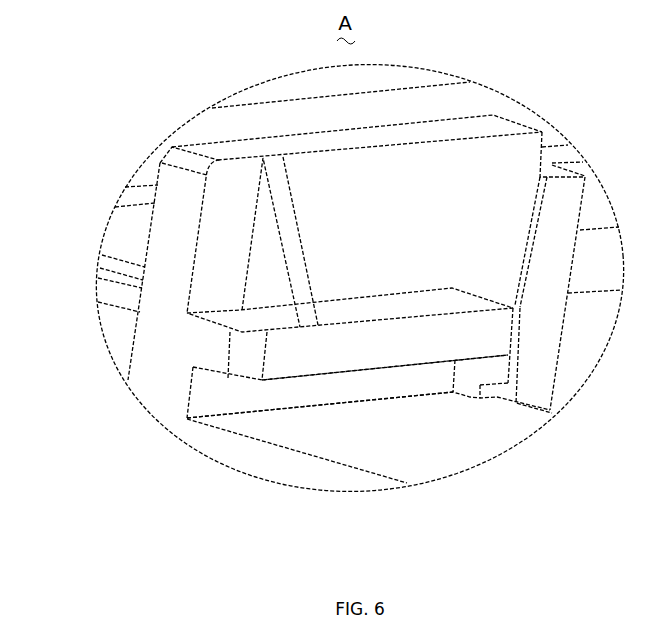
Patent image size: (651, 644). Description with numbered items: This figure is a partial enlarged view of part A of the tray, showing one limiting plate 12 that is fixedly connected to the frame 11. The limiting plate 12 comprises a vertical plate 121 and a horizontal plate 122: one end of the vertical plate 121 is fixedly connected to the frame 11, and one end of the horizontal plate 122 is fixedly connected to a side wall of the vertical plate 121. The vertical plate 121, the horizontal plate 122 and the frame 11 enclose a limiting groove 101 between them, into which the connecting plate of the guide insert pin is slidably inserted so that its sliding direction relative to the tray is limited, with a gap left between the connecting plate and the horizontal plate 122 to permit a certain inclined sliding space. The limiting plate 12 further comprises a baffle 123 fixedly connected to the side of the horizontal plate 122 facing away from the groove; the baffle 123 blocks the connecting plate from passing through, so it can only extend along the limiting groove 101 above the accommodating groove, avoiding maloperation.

The frame 11 is at (375, 443).
The limiting groove 101 is at (327, 392).
The limiting plate 12 is at (270, 329).
The vertical plate 121 is at (173, 278).
The horizontal plate 122 is at (243, 358).
The baffle 123 is at (277, 273).